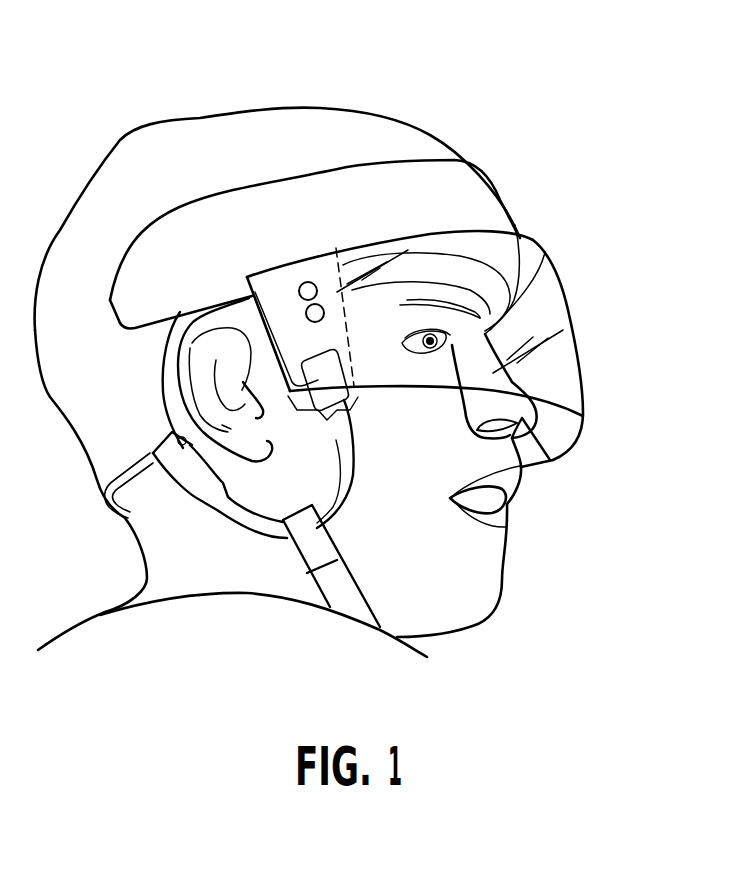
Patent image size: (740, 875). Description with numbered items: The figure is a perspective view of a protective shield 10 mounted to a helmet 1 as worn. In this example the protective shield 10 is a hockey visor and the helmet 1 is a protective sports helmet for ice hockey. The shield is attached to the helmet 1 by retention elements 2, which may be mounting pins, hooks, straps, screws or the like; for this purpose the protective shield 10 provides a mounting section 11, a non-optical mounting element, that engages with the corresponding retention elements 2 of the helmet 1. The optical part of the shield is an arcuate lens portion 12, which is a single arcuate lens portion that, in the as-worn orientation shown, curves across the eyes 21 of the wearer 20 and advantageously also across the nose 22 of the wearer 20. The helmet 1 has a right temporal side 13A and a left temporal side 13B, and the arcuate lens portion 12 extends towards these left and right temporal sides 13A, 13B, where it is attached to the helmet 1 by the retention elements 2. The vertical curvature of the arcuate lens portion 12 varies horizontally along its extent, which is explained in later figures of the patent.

The helmet 1 is at (477, 107).
The retention elements 2 is at (308, 282).
The protective shield 10 is at (565, 291).
The mounting section 11 is at (323, 403).
The arcuate lens portion 12 is at (572, 327).
The right temporal side 13A is at (391, 398).
The left temporal side 13B is at (532, 473).
The wearer 20 is at (528, 587).
The eyes 21 is at (430, 336).
The nose 22 is at (545, 458).